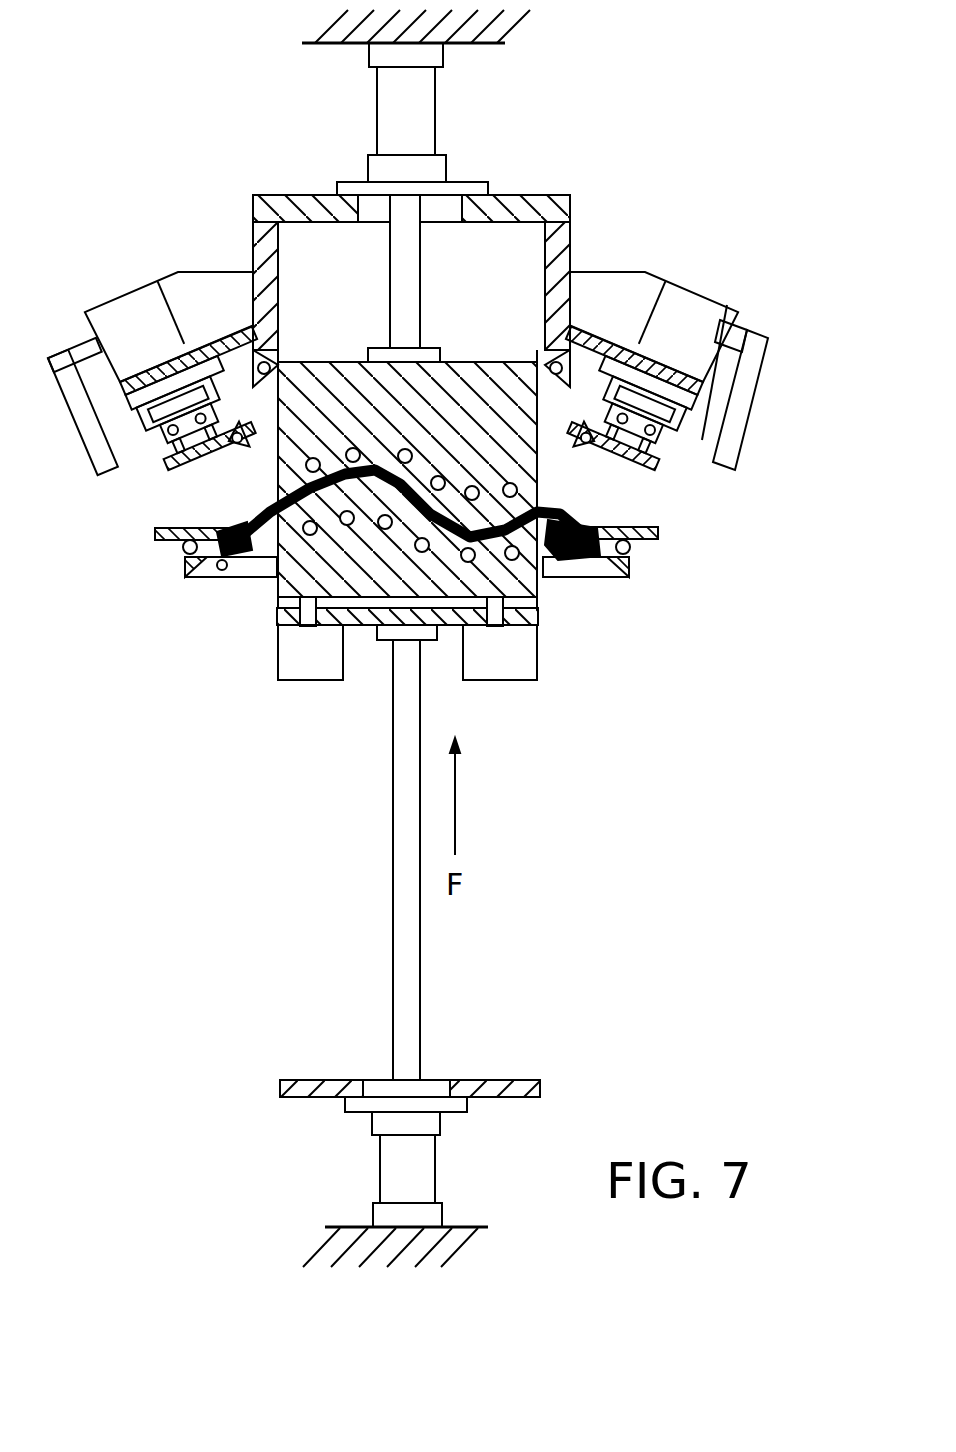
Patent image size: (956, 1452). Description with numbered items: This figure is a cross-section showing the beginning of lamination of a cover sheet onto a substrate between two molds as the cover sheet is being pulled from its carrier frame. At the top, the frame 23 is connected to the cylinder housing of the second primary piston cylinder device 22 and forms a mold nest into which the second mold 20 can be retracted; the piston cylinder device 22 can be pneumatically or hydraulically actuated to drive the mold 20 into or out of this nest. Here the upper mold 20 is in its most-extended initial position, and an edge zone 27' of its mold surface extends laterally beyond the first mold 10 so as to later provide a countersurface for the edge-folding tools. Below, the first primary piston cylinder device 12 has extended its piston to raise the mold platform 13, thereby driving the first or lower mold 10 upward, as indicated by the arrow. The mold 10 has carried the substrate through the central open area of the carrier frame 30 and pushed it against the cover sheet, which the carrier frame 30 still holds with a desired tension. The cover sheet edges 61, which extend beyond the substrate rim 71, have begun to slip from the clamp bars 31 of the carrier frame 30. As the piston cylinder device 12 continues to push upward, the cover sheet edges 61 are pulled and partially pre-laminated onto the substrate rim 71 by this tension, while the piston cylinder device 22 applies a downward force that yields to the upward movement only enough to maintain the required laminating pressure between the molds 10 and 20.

The second primary piston cylinder device 22 is at (425, 118).
The frame 23 is at (556, 240).
The second mold 20 is at (537, 471).
The edge zone 27' is at (526, 505).
The clamp bars 31 is at (590, 530).
The carrier frame 30 is at (630, 573).
The cover sheet edges 61 is at (208, 572).
The substrate rim 71 is at (235, 540).
The first mold 10 is at (272, 590).
The mold platform 13 is at (276, 625).
The first primary piston cylinder device 12 is at (420, 1022).